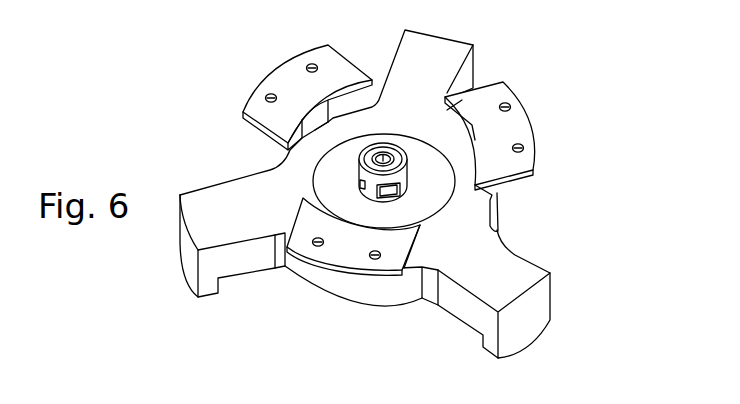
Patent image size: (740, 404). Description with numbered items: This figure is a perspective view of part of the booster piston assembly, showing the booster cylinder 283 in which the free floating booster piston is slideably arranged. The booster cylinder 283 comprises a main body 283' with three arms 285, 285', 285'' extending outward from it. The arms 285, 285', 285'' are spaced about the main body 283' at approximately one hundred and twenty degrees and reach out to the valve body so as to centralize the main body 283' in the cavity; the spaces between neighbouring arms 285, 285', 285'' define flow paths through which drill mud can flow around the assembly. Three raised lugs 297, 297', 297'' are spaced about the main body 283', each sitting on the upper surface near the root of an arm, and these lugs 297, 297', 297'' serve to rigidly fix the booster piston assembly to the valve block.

The booster cylinder 283 is at (540, 208).
The main body 283' is at (365, 253).
The arm 285 is at (532, 294).
The arm 285' is at (459, 76).
The arm 285'' is at (253, 207).
The raised lug 297 is at (542, 136).
The raised lug 297' is at (261, 96).
The raised lug 297'' is at (347, 274).